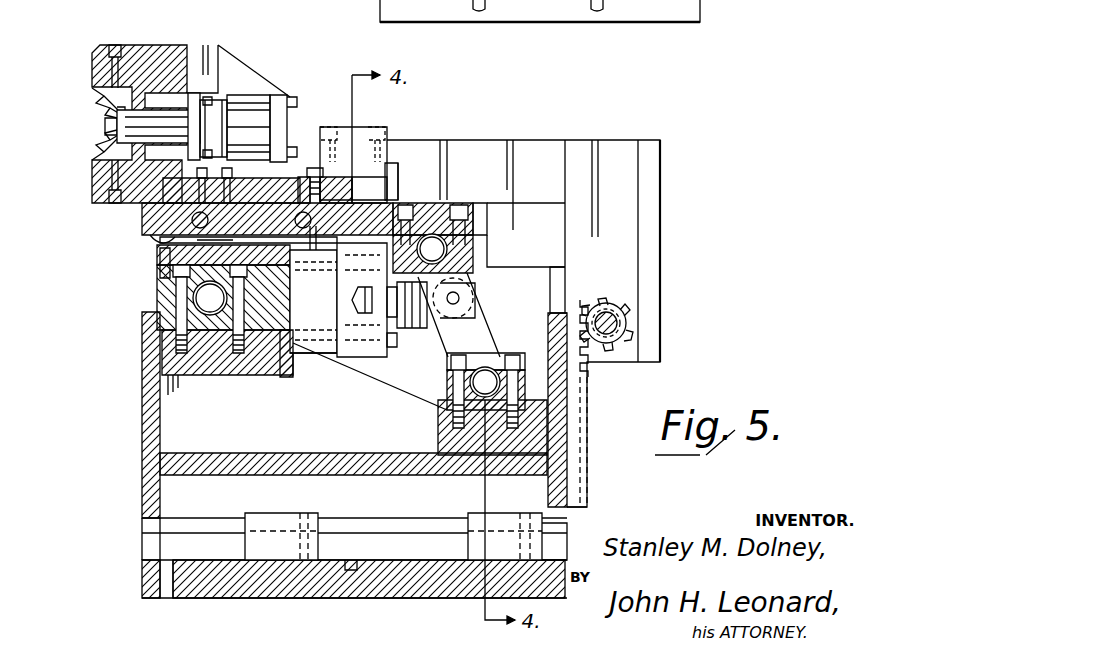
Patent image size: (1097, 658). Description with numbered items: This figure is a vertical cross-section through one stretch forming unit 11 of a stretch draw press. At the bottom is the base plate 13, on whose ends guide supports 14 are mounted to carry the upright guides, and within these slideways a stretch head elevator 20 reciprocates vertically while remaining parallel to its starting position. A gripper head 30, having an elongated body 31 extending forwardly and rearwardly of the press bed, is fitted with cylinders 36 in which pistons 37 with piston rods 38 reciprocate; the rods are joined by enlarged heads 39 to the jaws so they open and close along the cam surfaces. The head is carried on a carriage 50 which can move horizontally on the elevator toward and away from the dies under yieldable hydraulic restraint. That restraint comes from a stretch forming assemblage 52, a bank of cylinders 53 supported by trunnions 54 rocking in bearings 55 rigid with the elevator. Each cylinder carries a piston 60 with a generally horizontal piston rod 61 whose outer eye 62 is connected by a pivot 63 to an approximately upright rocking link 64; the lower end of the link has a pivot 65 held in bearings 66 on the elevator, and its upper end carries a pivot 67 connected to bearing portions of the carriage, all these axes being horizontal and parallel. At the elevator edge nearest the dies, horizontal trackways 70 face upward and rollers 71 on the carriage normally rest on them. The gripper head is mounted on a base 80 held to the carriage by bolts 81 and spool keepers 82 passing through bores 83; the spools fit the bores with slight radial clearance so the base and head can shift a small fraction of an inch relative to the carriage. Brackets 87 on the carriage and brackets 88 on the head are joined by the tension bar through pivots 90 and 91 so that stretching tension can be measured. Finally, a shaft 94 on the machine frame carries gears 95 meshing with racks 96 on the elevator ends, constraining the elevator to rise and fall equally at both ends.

The unit 11 is at (140, 418).
The base plate 13 is at (700, 17).
The guide supports 14 is at (150, 545).
The stretch head elevator 20 is at (140, 370).
The gripper head 30 is at (140, 45).
The elongated body 31 is at (173, 55).
The cylinders 36 is at (242, 97).
The pistons 37 is at (243, 120).
The piston rods 38 is at (100, 100).
The enlarged heads 39 is at (115, 128).
The carriage 50 is at (142, 208).
The stretch forming assemblage 52 is at (323, 343).
The cylinders 53 is at (300, 348).
The trunnions 54 is at (205, 298).
The bearings 55 is at (290, 297).
The piston 60 is at (357, 353).
The piston rod 61 is at (413, 285).
The eye 62 is at (480, 305).
The pivot 63 is at (440, 298).
The rocking link 64 is at (478, 330).
The pivots 65 is at (490, 360).
The bearings 66 is at (530, 382).
The pivots 67 is at (465, 245).
The trackways 70 is at (160, 262).
The rollers 71 is at (158, 240).
The base 80 is at (297, 175).
The bolts 81 is at (322, 178).
The spool keepers 82 is at (363, 197).
The bores 83 is at (352, 195).
The brackets 87 is at (312, 228).
The brackets 88 is at (218, 200).
The pivot 90 is at (300, 228).
The pivot 91 is at (205, 205).
The shaft 94 is at (615, 325).
The gears 95 is at (622, 308).
The racks 96 is at (585, 452).